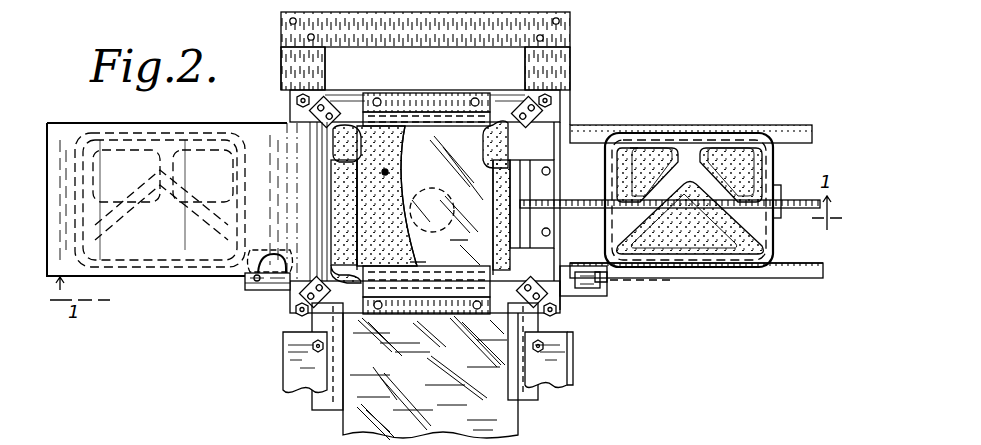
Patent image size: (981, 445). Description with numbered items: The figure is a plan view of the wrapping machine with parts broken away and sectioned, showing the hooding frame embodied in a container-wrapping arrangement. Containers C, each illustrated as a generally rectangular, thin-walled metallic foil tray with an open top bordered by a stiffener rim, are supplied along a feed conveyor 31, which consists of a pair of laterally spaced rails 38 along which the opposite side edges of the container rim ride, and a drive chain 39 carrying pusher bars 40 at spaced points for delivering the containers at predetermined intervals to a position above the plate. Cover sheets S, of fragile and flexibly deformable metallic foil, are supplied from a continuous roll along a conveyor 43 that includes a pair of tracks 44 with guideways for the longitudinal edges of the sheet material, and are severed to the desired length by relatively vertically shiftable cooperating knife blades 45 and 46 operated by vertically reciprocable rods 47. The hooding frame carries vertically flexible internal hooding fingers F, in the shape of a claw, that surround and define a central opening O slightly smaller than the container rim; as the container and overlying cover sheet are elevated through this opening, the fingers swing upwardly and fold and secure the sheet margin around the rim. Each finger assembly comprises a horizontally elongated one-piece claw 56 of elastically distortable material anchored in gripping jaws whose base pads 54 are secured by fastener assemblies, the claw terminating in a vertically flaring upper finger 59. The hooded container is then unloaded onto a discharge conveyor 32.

The central opening O is at (386, 170).
The base pads 54 is at (452, 106).
The container C is at (686, 132).
The rails 38 is at (772, 127).
The pusher bars 40 is at (782, 186).
The drive chain 39 is at (803, 212).
The upper finger 59 is at (510, 180).
The cover sheet S is at (459, 228).
The hooding fingers F is at (418, 250).
The claw 56 is at (410, 280).
The vertically reciprocable rods 47 is at (185, 246).
The knife blade 45 is at (280, 260).
The discharge conveyor 32 is at (166, 279).
The tracks 44 is at (320, 397).
The conveyor 43 is at (578, 362).
The knife blade 46 is at (600, 290).
The feed conveyor 31 is at (742, 280).